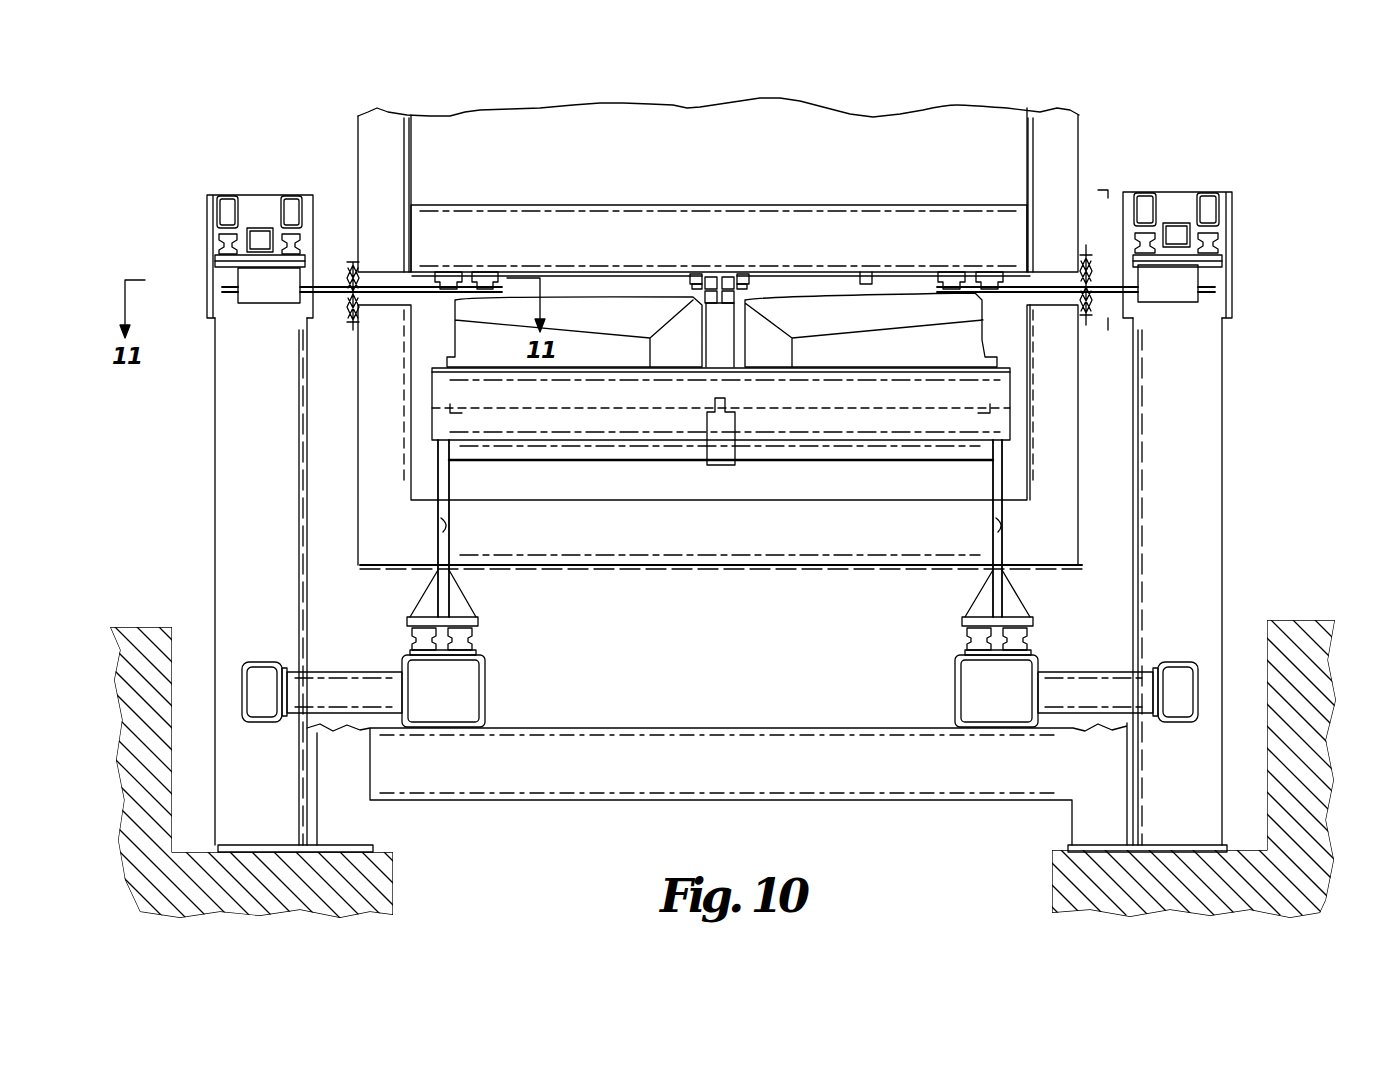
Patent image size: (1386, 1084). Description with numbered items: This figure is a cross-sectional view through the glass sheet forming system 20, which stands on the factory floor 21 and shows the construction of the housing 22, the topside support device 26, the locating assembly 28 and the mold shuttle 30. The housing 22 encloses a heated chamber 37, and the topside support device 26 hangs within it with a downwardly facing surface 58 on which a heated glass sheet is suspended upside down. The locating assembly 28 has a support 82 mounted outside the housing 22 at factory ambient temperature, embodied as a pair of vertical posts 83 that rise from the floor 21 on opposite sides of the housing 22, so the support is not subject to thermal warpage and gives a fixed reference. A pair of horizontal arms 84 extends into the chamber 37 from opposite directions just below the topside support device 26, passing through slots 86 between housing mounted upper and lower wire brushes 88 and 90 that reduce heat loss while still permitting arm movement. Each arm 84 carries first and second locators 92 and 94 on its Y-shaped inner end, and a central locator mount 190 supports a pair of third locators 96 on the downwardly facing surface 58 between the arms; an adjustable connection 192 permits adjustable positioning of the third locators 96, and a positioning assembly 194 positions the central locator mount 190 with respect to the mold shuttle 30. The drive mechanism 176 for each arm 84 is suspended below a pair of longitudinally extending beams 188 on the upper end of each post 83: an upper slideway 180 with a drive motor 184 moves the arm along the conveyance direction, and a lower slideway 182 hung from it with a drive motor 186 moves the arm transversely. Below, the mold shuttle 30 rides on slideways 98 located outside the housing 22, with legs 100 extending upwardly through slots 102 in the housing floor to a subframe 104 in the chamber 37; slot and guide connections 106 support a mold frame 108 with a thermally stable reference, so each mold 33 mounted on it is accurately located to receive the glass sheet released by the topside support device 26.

The glass sheet forming system 20 is at (1172, 113).
The floor 21 is at (150, 625).
The housing 22 is at (1103, 192).
The topside support device 26 is at (757, 200).
The locating assembly 28 is at (1122, 330).
The mold shuttle 30 is at (425, 452).
The mold 33 is at (472, 338).
The heated chamber 37 is at (1032, 362).
The downwardly facing surface 58 is at (866, 280).
The support 82 is at (215, 340).
The vertical posts 83 is at (228, 430).
The horizontal arms 84 is at (382, 282).
The slots 86 is at (397, 300).
The upper wire brushes 88 is at (352, 262).
The lower wire brushes 90 is at (351, 305).
The first locator 92 is at (486, 272).
The second locator 94 is at (448, 272).
The third locator 96 is at (690, 281).
The slideways 98 is at (495, 653).
The legs 100 is at (443, 552).
The slots 102 is at (446, 522).
The subframe 104 is at (639, 450).
The slot and guide connection 106 is at (453, 408).
The mold frame 108 is at (452, 383).
The drive mechanism 176 is at (200, 220).
The slideway 180 is at (285, 252).
The slideway 182 is at (238, 280).
The drive motor 184 is at (263, 227).
The drive motor 186 is at (287, 278).
The beams 188 is at (230, 194).
The central locator mount 190 is at (737, 266).
The adjustable connection 192 is at (710, 278).
The positioning assembly 194 is at (752, 288).